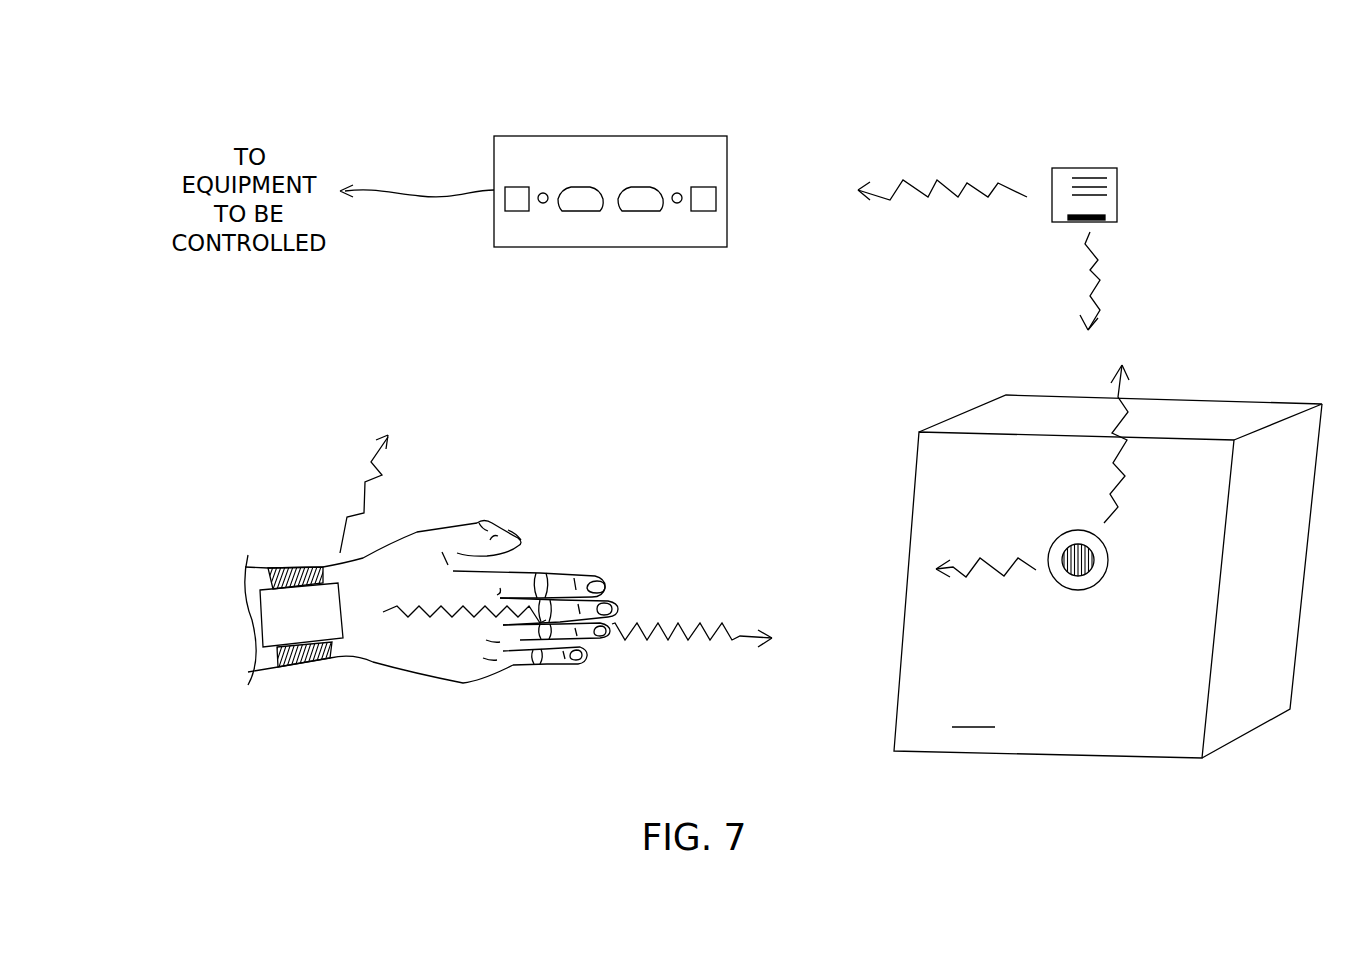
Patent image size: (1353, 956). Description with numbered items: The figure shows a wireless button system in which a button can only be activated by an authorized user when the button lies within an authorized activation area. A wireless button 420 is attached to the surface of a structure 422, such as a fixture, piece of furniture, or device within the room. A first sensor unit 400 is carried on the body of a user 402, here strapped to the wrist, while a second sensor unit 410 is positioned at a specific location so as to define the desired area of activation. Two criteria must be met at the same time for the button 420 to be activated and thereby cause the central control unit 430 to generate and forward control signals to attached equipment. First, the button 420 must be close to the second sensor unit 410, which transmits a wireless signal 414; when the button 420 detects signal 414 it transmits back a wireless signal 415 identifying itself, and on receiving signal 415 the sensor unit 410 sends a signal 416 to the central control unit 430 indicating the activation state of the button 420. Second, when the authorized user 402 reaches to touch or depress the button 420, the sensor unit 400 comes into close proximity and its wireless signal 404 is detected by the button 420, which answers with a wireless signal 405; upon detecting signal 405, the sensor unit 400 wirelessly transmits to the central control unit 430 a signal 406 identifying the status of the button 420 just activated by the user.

The first sensor unit 400 is at (343, 638).
The user 402 is at (410, 514).
The wireless signal 404 is at (722, 633).
The wireless signal 405 is at (967, 562).
The signal 406 is at (367, 480).
The second sensor unit 410 is at (1117, 195).
The wireless signal 414 is at (1100, 282).
The wireless signal 415 is at (1115, 433).
The signal 416 is at (932, 188).
The wireless button 420 is at (1090, 588).
The structure 422 is at (1108, 576).
The central control unit 430 is at (628, 247).